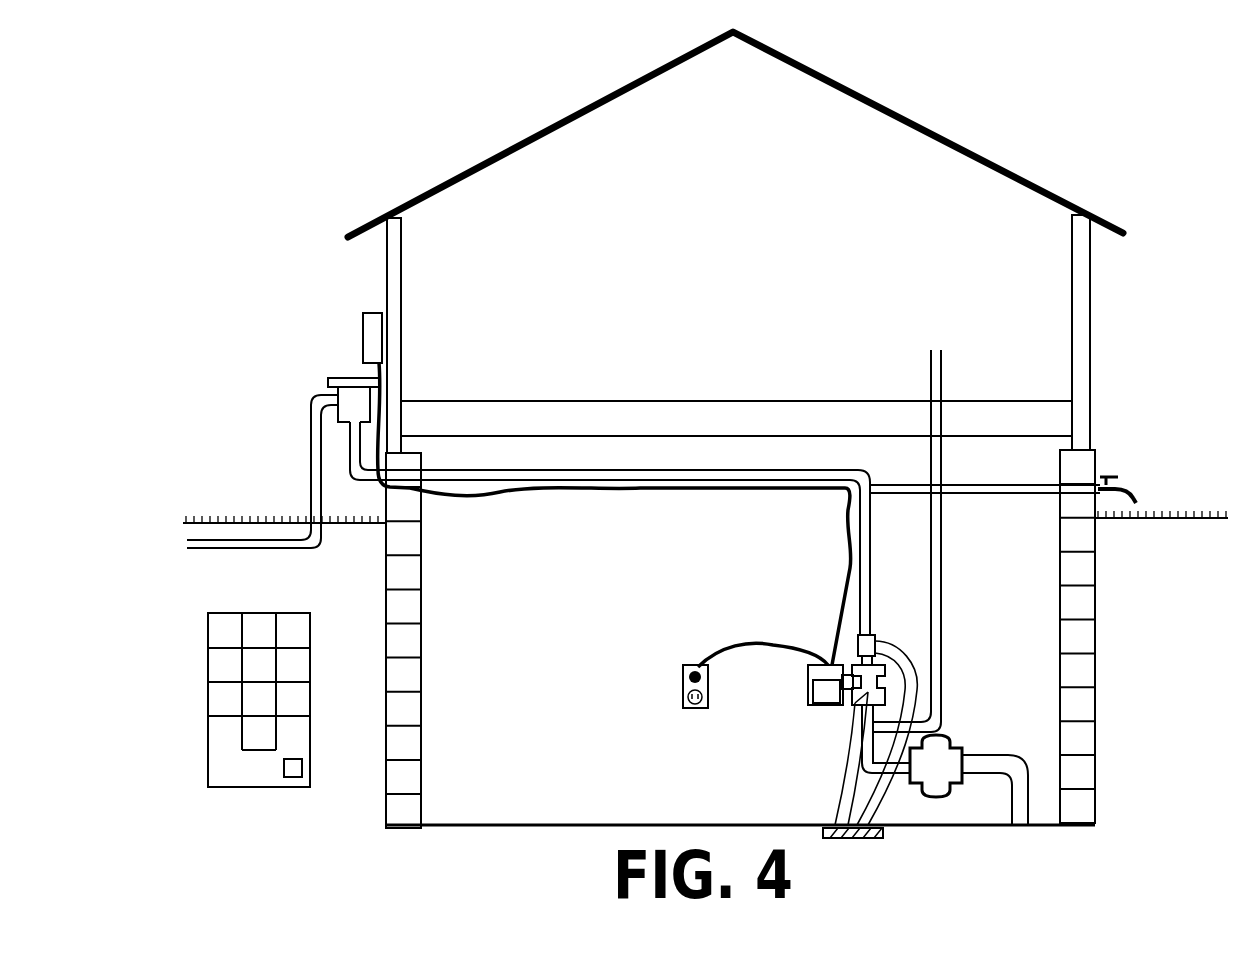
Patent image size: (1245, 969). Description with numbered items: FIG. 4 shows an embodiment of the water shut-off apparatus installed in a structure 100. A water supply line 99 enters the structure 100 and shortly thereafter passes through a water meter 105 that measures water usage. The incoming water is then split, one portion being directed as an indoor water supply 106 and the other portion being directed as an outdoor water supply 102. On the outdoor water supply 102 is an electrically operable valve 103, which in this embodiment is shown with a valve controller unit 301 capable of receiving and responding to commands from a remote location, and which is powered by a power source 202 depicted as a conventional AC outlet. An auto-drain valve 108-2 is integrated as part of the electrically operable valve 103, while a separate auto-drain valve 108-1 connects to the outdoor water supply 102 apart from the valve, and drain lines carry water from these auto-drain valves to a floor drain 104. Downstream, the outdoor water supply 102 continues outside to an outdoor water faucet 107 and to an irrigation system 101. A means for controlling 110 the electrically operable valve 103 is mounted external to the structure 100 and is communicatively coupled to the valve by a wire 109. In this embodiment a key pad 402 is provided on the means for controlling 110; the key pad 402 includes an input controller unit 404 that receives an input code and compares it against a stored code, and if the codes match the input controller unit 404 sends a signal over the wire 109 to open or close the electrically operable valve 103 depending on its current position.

The structure 100 is at (922, 122).
The means for controlling 110 is at (363, 313).
The irrigation system 101 is at (353, 380).
The outdoor water supply 102 is at (873, 528).
The wire 109 is at (505, 492).
The indoor water supply 106 is at (942, 523).
The outdoor water faucet 107 is at (1125, 482).
The auto-drain valve 108-1 is at (892, 622).
The auto-drain valve 108-2 is at (840, 712).
The electrically operable valve 103 is at (807, 670).
The valve controller unit 301 is at (812, 683).
The water meter 105 is at (945, 735).
The water supply line 99 is at (1018, 825).
The floor drain 104 is at (830, 825).
The power source 202 is at (695, 665).
The key pad 402 is at (227, 613).
The input controller unit 404 is at (302, 759).